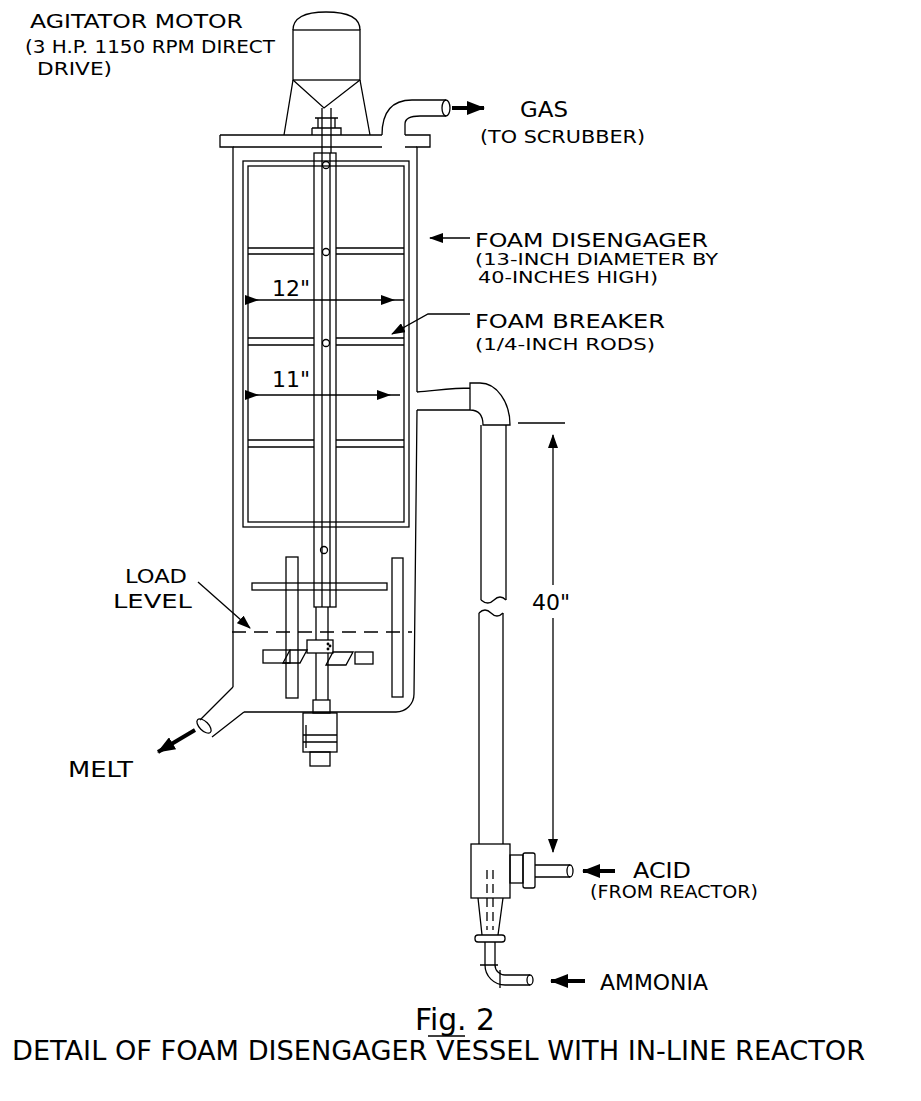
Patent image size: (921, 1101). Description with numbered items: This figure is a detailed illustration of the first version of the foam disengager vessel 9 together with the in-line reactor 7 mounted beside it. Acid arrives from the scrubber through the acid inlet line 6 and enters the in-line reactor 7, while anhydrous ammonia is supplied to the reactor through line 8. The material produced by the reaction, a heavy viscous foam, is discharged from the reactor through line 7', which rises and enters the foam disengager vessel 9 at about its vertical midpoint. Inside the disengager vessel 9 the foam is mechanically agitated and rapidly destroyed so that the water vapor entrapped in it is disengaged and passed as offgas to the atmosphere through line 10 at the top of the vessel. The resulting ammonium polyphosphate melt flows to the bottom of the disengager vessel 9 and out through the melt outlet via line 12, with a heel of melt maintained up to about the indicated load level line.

The acid inlet line 6 is at (560, 865).
The in-line reactor 7 is at (457, 893).
The line 7' is at (463, 613).
The line 8 is at (505, 976).
The foam disengager vessel 9 is at (232, 455).
The line 10 is at (415, 97).
The line 12 is at (228, 722).